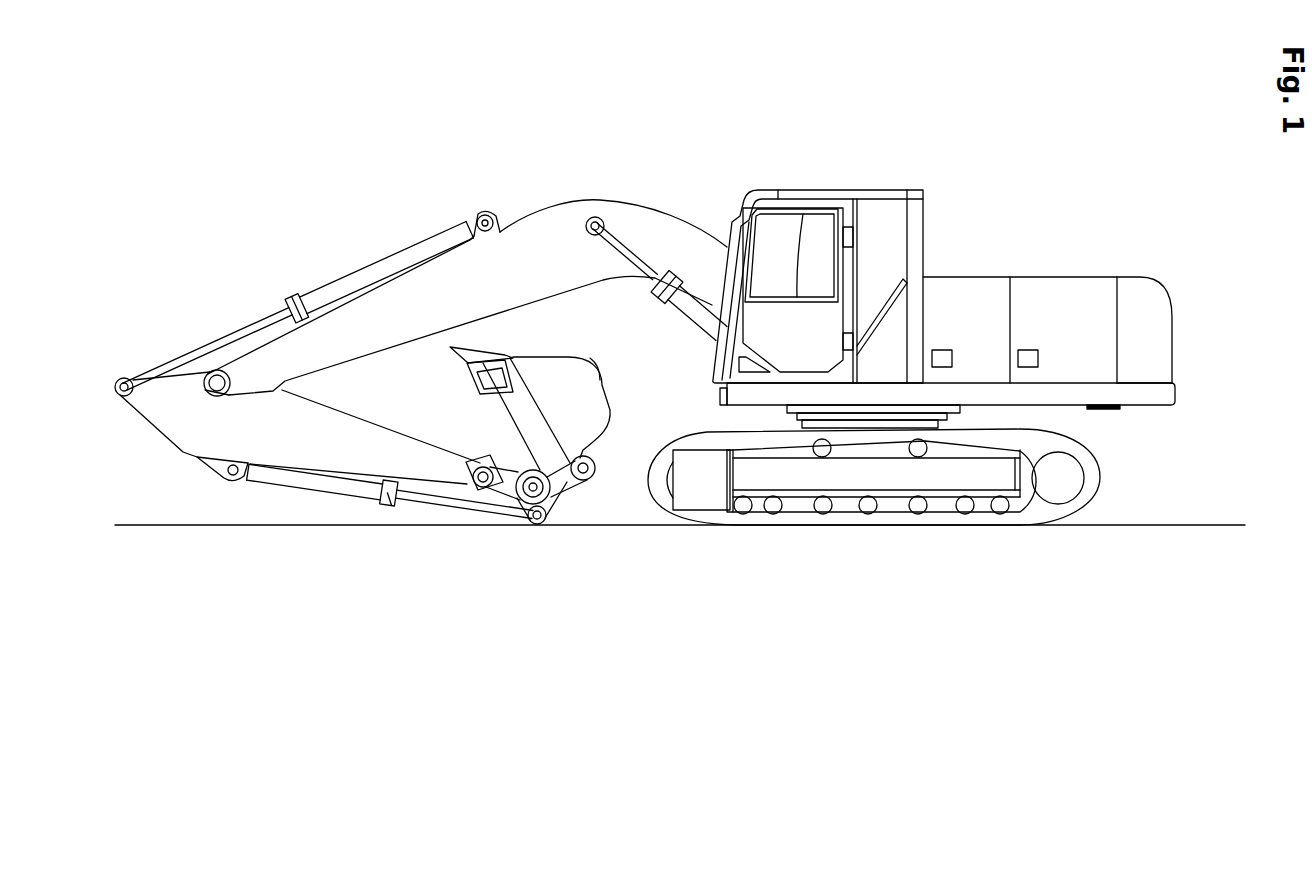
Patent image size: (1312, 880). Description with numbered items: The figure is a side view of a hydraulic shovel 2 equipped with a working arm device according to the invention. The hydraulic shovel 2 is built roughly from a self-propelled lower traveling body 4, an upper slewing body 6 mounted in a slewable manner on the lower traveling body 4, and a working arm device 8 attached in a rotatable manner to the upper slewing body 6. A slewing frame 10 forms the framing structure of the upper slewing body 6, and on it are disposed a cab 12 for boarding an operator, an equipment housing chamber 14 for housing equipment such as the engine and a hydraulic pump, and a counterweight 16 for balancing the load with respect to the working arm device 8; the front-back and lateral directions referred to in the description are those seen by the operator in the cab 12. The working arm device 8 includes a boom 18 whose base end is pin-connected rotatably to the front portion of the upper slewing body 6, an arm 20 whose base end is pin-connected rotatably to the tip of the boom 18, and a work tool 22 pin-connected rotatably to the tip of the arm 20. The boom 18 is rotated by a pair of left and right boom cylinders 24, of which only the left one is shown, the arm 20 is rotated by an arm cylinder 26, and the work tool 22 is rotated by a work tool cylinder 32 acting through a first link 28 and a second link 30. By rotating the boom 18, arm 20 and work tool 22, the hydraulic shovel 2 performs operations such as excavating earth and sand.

The hydraulic shovel 2 is at (1148, 110).
The lower traveling body 4 is at (1097, 488).
The upper slewing body 6 is at (965, 272).
The working arm device 8 is at (583, 193).
The slewing frame 10 is at (1092, 398).
The cab 12 is at (850, 187).
The equipment housing chamber 14 is at (1098, 297).
The counterweight 16 is at (1147, 345).
The boom 18 is at (650, 225).
The arm 20 is at (162, 428).
The work tool 22 is at (598, 410).
The boom cylinder 24 is at (698, 313).
The arm cylinder 26 is at (412, 250).
The first link 28 is at (518, 500).
The second link 30 is at (558, 502).
The work tool cylinder 32 is at (263, 478).